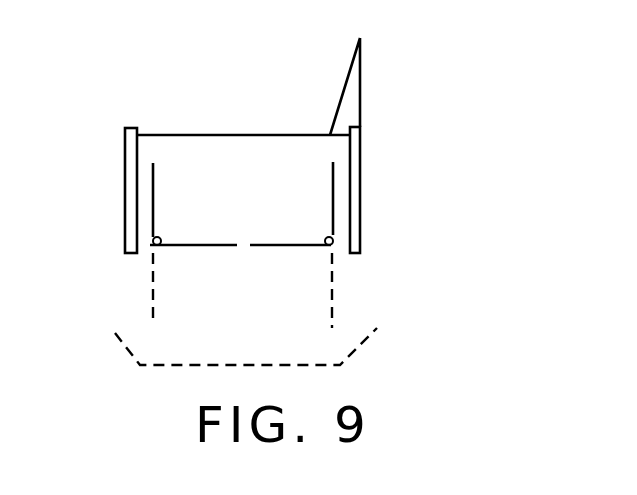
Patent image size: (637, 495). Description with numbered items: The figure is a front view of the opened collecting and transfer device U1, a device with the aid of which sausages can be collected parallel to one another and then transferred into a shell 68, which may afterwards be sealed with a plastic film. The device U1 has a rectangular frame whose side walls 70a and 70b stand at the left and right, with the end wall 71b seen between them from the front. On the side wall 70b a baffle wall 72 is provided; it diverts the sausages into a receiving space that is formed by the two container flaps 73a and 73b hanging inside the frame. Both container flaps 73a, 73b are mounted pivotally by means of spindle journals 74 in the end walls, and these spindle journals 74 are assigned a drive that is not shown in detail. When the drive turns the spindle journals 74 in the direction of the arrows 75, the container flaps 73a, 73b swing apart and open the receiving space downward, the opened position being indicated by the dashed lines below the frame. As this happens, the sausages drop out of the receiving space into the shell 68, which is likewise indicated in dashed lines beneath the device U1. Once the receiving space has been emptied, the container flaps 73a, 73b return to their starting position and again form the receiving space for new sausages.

The shell 68 is at (345, 368).
The side wall 70a is at (127, 202).
The side wall 70b is at (358, 190).
The end wall 71b is at (165, 144).
The baffle wall 72 is at (362, 98).
The container flap 73a is at (151, 186).
The container flap 73b is at (335, 175).
The spindle journal 74 is at (158, 247).
The arrows 75 is at (277, 229).
The collecting and transfer device U1 is at (225, 113).